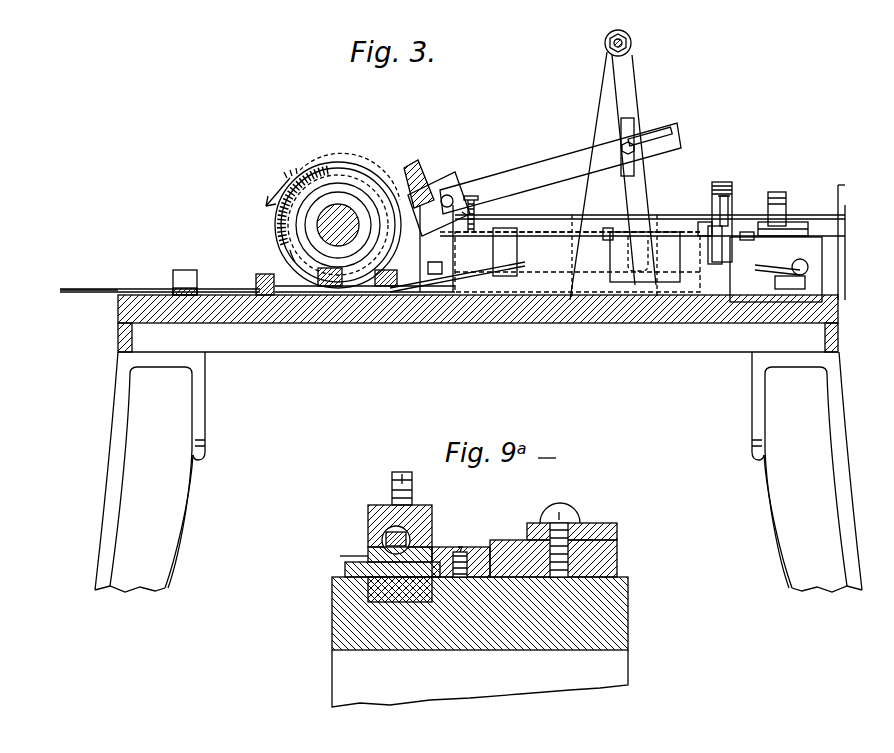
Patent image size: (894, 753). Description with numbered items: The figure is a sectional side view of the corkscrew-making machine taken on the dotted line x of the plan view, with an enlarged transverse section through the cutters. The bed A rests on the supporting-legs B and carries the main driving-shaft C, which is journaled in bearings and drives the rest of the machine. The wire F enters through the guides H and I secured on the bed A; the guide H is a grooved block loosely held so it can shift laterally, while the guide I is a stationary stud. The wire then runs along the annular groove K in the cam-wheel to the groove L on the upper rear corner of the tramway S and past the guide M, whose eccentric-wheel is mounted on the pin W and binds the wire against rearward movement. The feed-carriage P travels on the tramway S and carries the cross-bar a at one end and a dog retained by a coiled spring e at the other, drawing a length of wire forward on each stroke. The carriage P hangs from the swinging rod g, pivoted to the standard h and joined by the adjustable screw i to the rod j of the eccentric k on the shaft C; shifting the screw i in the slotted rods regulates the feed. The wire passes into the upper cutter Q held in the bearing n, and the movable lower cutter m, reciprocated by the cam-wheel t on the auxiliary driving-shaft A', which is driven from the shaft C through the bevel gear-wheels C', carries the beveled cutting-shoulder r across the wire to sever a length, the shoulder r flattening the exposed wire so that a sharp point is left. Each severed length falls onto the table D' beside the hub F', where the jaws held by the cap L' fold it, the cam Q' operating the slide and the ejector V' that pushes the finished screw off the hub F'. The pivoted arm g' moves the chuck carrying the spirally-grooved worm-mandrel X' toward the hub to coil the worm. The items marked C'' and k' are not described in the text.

In FIG. 3, the bed A is at (449, 321).
In FIG. 3, the supporting-legs B is at (478, 472).
In FIG. 3, the main driving-shaft C is at (338, 225).
In FIG. 3, the bevel gear-wheels C' is at (297, 205).
In FIG. 3, the bracket C'' is at (418, 180).
In FIG. 3, the eccentric k is at (350, 171).
In FIG. 3, the cam ring inner k' is at (289, 252).
In FIG. 3, the groove L is at (365, 248).
In FIG. 3, the rod of the eccentric j is at (544, 179).
In FIG. 3, the upper cutter Q is at (442, 199).
In FIG. 9A, the upper cutter Q is at (375, 530).
In FIG. 3, the swinging rod g is at (630, 157).
In FIG. 3, the standard h is at (613, 176).
In FIG. 3, the screw i is at (622, 146).
In FIG. 3, the auxiliary driving-shaft A' is at (642, 243).
In FIG. 3, the tramway S is at (577, 262).
In FIG. 3, the guide M is at (505, 252).
In FIG. 3, the pin W is at (477, 214).
In FIG. 3, the dotted line x x is at (459, 210).
In FIG. 3, the wire F is at (160, 278).
In FIG. 3, the guide H is at (185, 274).
In FIG. 3, the guide I is at (265, 276).
In FIG. 3, the pivoted arm g' is at (457, 276).
In FIG. 3, the feed-carriage P is at (645, 257).
In FIG. 3, the annular groove K is at (608, 227).
In FIG. 3, the cam-wheel t is at (716, 222).
In FIG. 3, the cross-bar a is at (723, 201).
In FIG. 3, the coiled spring e is at (702, 223).
In FIG. 3, the bearing n is at (710, 245).
In FIG. 9A, the bearing n is at (432, 512).
In FIG. 3, the cam Q' is at (777, 201).
In FIG. 3, the cap L' is at (783, 221).
In FIG. 3, the movable lower cutter m is at (754, 242).
In FIG. 9A, the movable lower cutter m is at (345, 567).
In FIG. 3, the table D' is at (787, 243).
In FIG. 3, the ejector V' is at (775, 268).
In FIG. 3, the worm-mandrel X' is at (790, 287).
In FIG. 9A, the hub F' is at (384, 550).
In FIG. 9A, the beveled cutting-shoulder r is at (340, 556).